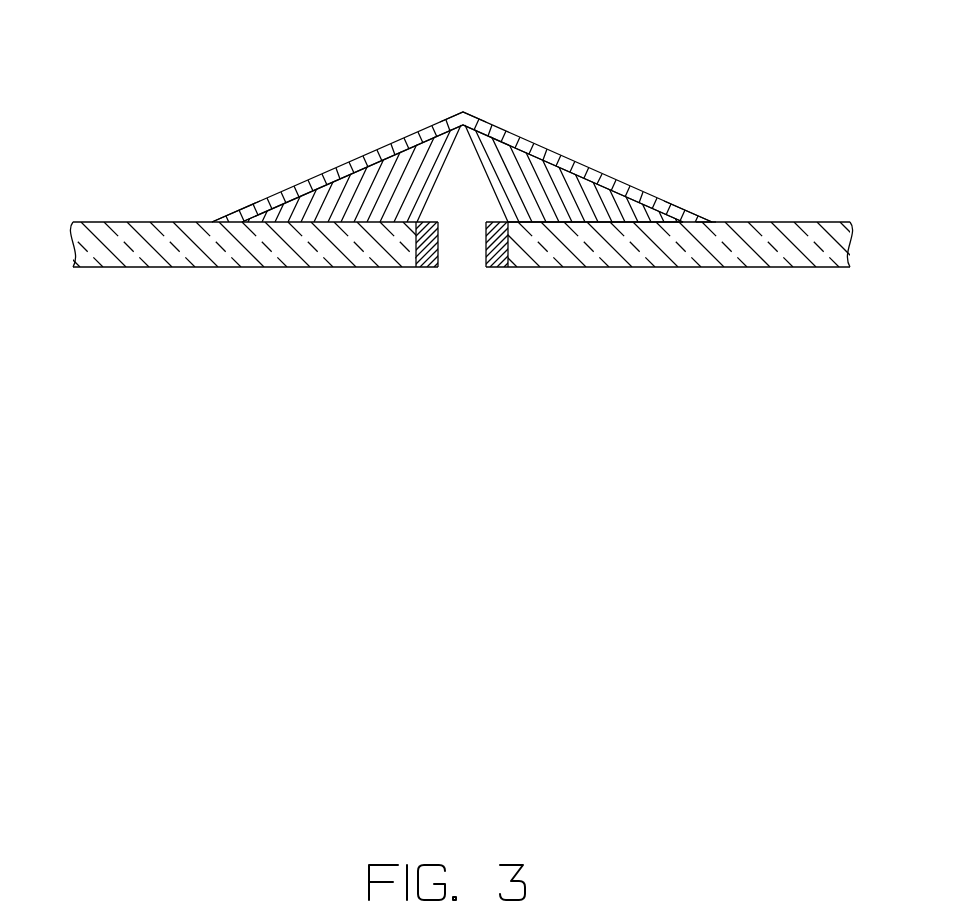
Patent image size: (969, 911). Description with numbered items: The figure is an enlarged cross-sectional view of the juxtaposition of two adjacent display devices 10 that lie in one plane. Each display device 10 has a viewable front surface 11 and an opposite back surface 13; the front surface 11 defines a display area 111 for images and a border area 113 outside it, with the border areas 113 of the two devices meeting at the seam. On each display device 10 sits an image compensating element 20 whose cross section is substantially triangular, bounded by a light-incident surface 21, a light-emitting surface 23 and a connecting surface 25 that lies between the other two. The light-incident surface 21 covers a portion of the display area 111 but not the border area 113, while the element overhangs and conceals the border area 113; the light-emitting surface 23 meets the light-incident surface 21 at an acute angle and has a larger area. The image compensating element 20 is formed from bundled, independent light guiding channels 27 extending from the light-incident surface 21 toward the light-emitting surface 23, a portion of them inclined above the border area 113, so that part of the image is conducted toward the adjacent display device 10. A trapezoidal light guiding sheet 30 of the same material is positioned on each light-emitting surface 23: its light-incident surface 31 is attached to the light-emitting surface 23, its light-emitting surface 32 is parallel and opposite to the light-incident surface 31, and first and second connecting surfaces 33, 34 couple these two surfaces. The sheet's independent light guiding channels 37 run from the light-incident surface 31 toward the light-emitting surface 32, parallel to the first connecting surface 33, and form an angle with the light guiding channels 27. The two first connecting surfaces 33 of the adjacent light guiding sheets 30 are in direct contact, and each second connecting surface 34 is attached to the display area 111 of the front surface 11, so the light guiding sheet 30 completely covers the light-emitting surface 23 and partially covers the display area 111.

The display device 10 is at (108, 240).
The front surface 11 is at (461, 167).
The display area 111 is at (112, 222).
The back surface 13 is at (243, 266).
The border area 113 is at (497, 268).
The image compensating element 20 is at (450, 148).
The light guiding channel 27 is at (280, 203).
The light-incident surface 21 is at (547, 218).
The light-emitting surface 23 is at (462, 117).
The light-incident surface 31 is at (380, 138).
The connecting surface 25 is at (492, 189).
The light guiding sheet 30 is at (457, 131).
The light guiding channel 37 is at (362, 160).
The light-emitting surface 32 is at (237, 205).
The first connecting surface 33 is at (458, 114).
The second connecting surface 34 is at (704, 223).